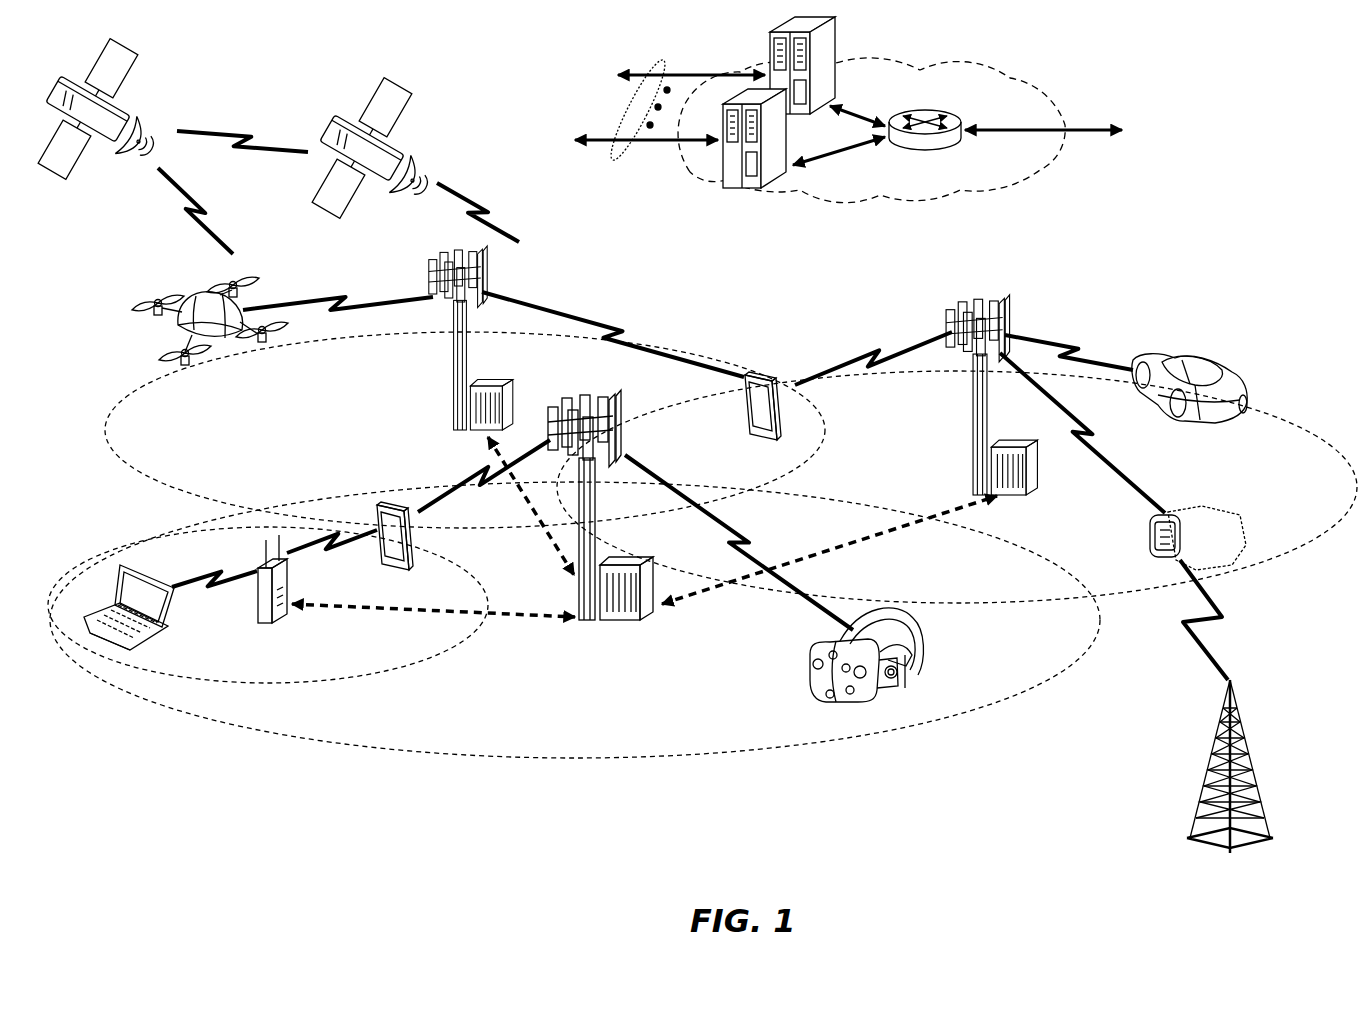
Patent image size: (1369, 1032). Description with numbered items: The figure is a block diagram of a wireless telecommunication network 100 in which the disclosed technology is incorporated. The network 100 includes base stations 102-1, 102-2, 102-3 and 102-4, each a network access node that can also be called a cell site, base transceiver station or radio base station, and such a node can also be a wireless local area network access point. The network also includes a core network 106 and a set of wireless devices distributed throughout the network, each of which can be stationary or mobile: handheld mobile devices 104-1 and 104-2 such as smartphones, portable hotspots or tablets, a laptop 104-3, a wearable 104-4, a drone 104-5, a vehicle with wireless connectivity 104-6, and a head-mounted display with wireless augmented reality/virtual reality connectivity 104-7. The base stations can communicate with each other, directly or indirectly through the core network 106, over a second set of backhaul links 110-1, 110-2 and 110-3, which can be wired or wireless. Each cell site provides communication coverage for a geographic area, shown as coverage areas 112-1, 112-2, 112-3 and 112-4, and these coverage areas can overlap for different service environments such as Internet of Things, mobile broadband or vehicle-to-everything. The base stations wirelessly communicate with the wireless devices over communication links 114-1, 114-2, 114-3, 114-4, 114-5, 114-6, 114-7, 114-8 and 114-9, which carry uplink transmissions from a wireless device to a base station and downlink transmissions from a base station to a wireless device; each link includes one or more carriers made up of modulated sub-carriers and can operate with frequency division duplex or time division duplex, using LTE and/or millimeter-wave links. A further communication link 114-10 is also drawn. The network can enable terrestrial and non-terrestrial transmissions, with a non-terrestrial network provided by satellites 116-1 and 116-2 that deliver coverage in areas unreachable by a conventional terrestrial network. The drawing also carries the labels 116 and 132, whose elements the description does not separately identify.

The wireless telecommunication network 100 is at (1265, 115).
The base station 102-1 is at (583, 625).
The base station 102-2 is at (450, 380).
The base station 102-3 is at (968, 410).
The base station 102-4 is at (256, 612).
The handheld mobile device 104-1 is at (452, 548).
The handheld mobile device 104-2 is at (746, 412).
The laptop 104-3 is at (104, 646).
The wearable 104-4 is at (1178, 518).
The drone 104-5 is at (218, 346).
The vehicle with wireless connectivity 104-6 is at (1212, 366).
The head-mounted display with wireless AR/VR connectivity 104-7 is at (918, 649).
The core network 106 is at (957, 196).
The backhaul link 110-1 is at (336, 612).
The backhaul link 110-2 is at (905, 540).
The backhaul link 110-3 is at (548, 534).
The geographic coverage area 112-1 is at (513, 758).
The geographic coverage area 112-2 is at (395, 670).
The geographic coverage area 112-3 is at (152, 482).
The geographic coverage area 112-4 is at (1270, 410).
The communication link 114-1 is at (746, 541).
The communication link 114-2 is at (478, 483).
The communication link 114-3 is at (186, 586).
The communication link 114-4 is at (330, 548).
The communication link 114-5 is at (330, 293).
The communication link 114-6 is at (868, 352).
The communication link 114-7 is at (618, 335).
The communication link 114-8 is at (1082, 438).
The communication link 114-9 is at (1065, 344).
The communication link 114-10 is at (1222, 613).
The radio tower 116 is at (1246, 764).
The satellite 116-1 is at (140, 125).
The satellite 116-2 is at (410, 162).
The network interface 132 is at (631, 160).